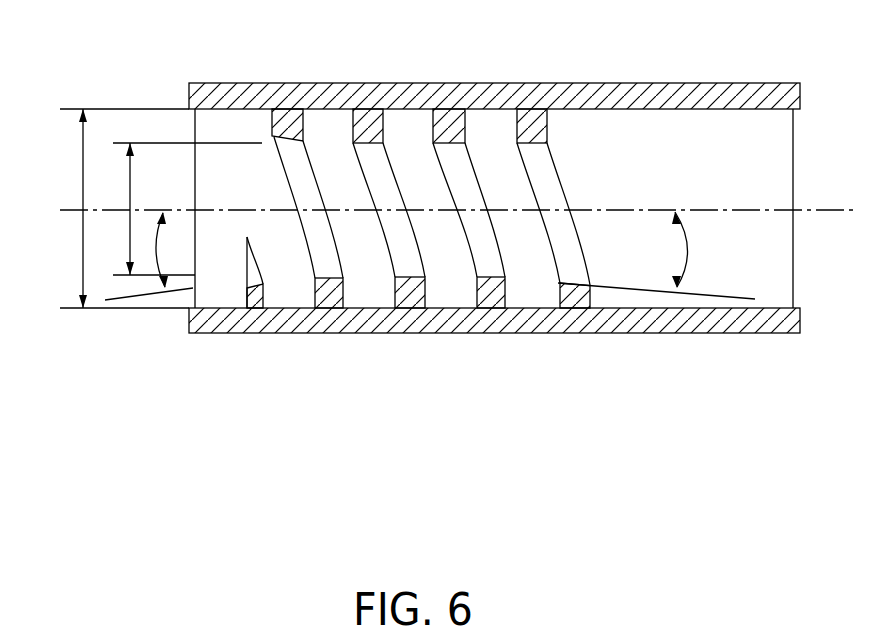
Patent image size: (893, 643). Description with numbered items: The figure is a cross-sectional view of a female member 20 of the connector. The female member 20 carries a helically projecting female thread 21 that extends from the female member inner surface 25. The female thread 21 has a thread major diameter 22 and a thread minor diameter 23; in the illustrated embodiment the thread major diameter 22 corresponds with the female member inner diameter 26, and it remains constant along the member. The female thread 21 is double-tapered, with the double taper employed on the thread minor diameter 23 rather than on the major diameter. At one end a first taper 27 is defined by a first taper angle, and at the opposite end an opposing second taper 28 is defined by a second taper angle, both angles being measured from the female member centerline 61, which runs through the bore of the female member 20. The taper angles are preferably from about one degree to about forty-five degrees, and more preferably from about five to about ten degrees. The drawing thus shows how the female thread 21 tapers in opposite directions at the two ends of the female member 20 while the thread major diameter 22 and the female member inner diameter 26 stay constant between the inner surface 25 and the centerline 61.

The female member 20 is at (247, 389).
The female thread 21 is at (329, 294).
The thread major diameter 22 is at (83, 262).
The thread minor diameter 23 is at (132, 188).
The female member inner surface 25 is at (230, 109).
The female member inner diameter 26 is at (83, 262).
The first taper 27 is at (643, 290).
The second taper 28 is at (130, 300).
The female member centerline 61 is at (70, 207).